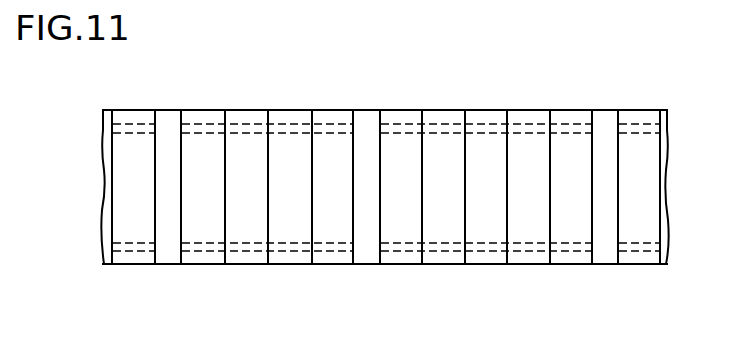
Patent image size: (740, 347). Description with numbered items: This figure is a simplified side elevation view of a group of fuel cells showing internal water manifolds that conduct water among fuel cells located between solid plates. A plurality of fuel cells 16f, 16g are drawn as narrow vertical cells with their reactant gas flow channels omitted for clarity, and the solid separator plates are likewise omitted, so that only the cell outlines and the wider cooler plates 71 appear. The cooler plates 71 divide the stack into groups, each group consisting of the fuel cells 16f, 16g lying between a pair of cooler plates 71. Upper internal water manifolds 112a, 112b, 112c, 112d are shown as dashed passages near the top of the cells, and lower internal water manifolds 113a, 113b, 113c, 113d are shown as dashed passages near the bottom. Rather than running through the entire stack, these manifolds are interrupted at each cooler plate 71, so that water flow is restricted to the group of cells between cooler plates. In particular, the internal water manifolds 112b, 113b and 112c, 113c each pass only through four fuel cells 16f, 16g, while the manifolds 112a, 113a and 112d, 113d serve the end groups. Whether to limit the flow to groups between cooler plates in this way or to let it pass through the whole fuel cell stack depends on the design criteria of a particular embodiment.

The cooler plate 71 is at (176, 118).
The fuel cell 16f is at (190, 258).
The fuel cell 16g is at (337, 258).
The internal water manifold 112a is at (137, 128).
The internal water manifold 112b is at (252, 128).
The internal water manifold 112c is at (478, 128).
The internal water manifold 112d is at (650, 127).
The internal water manifold 113a is at (137, 250).
The internal water manifold 113b is at (253, 250).
The internal water manifold 113c is at (455, 250).
The internal water manifold 113d is at (650, 250).